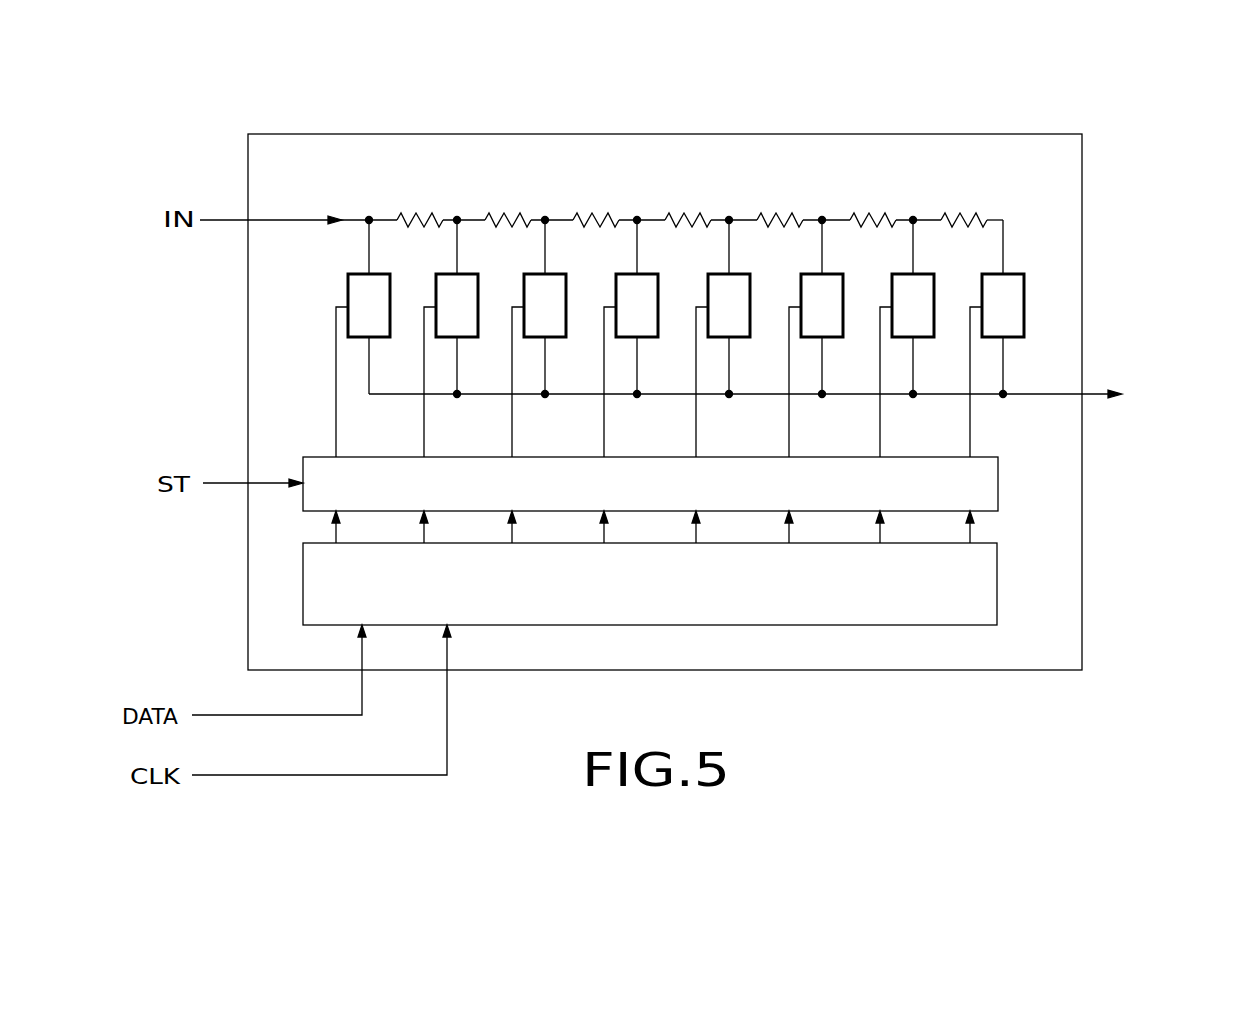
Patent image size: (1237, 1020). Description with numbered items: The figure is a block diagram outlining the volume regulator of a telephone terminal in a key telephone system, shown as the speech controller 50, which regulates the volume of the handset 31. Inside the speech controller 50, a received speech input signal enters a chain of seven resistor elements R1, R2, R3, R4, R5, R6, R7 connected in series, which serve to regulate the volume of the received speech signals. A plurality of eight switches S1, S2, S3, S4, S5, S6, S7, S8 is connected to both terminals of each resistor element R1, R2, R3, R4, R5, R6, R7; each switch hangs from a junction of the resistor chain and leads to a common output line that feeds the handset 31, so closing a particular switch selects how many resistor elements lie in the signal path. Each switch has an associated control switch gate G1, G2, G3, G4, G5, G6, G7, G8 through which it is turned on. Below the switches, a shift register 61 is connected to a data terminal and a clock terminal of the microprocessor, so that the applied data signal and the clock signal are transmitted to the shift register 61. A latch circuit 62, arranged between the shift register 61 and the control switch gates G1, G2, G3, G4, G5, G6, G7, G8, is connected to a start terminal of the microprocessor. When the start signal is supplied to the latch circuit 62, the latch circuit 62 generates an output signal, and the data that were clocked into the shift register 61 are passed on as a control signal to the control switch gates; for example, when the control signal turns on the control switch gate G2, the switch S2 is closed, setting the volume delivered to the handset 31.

The speech controller 50 is at (744, 134).
The handset 31 is at (796, 393).
The shift register 61 is at (997, 614).
The latch circuit 62 is at (998, 498).
The resistor element R1 is at (441, 205).
The resistor element R2 is at (529, 205).
The resistor element R3 is at (619, 205).
The resistor element R4 is at (711, 205).
The resistor element R5 is at (803, 205).
The resistor element R6 is at (895, 205).
The resistor element R7 is at (972, 205).
The switch S1 is at (369, 306).
The switch S2 is at (457, 307).
The switch S3 is at (545, 307).
The switch S4 is at (637, 307).
The switch S5 is at (729, 307).
The switch S6 is at (822, 307).
The switch S7 is at (913, 307).
The switch S8 is at (1003, 309).
The control switch gate G1 is at (336, 318).
The control switch gate G2 is at (424, 318).
The control switch gate G3 is at (512, 318).
The control switch gate G4 is at (604, 318).
The control switch gate G5 is at (696, 318).
The control switch gate G6 is at (789, 318).
The control switch gate G7 is at (880, 318).
The control switch gate G8 is at (970, 318).